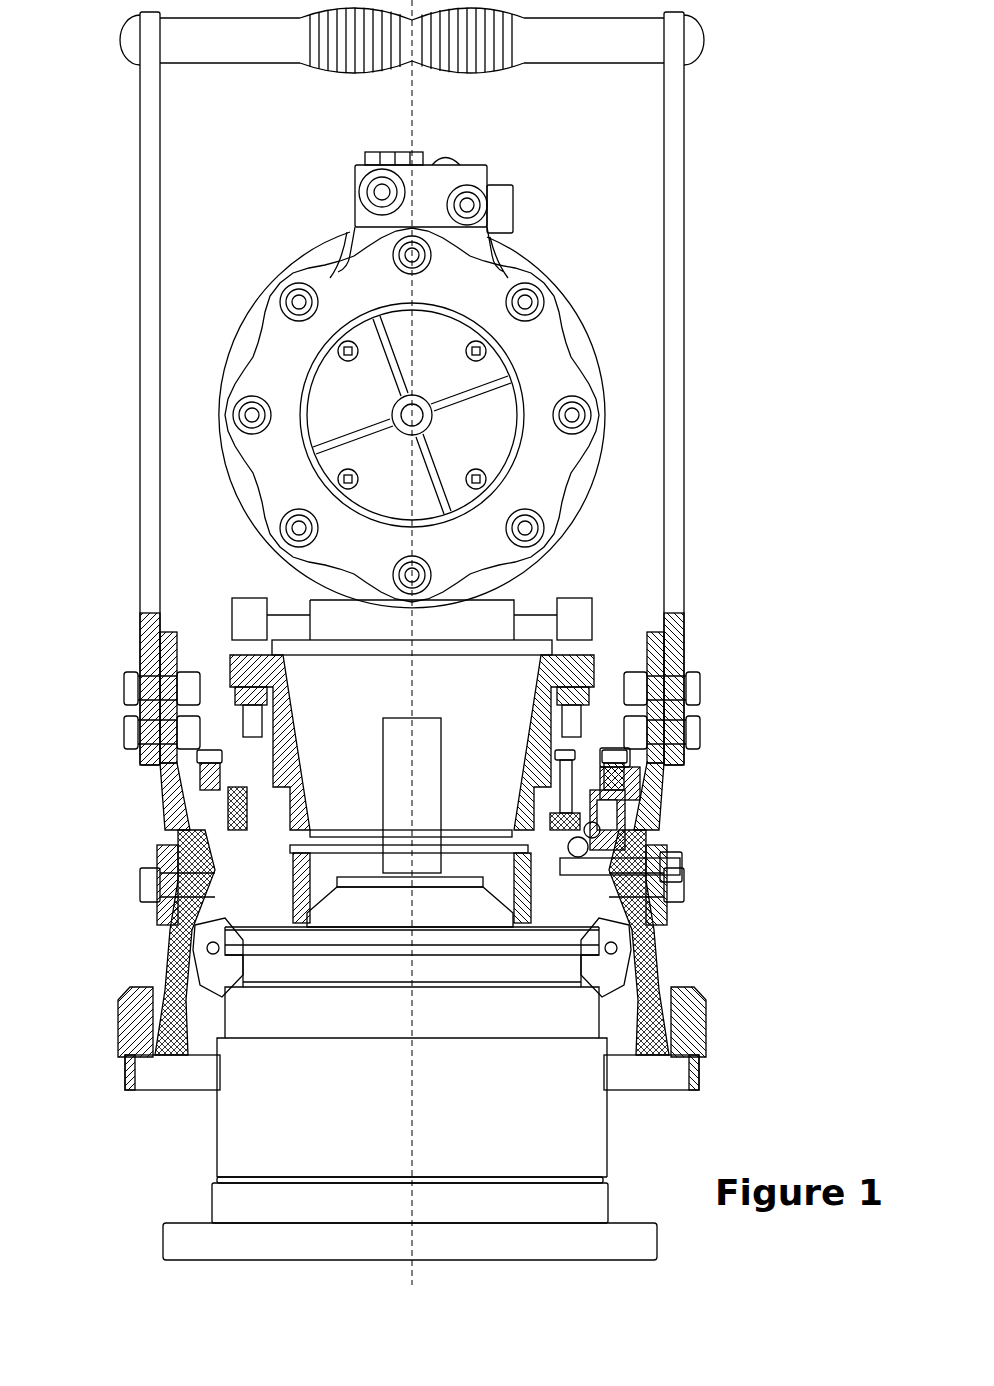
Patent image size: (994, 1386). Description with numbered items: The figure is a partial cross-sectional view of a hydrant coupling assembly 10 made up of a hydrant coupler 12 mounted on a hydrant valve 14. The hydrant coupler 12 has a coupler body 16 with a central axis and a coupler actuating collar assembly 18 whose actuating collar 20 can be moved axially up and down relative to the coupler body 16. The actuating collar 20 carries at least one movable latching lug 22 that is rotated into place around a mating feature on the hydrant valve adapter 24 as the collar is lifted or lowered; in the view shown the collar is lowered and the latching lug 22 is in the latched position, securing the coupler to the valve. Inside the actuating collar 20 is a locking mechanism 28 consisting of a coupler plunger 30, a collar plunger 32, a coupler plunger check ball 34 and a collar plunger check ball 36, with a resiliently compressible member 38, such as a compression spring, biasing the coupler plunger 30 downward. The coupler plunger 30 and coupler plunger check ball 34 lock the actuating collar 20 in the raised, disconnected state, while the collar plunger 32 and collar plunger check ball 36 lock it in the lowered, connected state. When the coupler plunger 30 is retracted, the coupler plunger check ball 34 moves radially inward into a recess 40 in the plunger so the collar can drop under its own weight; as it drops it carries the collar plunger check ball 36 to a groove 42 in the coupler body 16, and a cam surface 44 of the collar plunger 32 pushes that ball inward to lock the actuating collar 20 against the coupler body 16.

The hydrant coupling assembly 10 is at (92, 538).
The hydrant coupler 12 is at (683, 606).
The hydrant valve 14 is at (217, 1128).
The coupler body 16 is at (556, 726).
The coupler actuating collar assembly 18 is at (668, 952).
The actuating collar 20 is at (660, 977).
The latching lug 22 is at (612, 960).
The hydrant valve adapter 24 is at (235, 1205).
The locking mechanism 28 is at (619, 637).
The coupler plunger 30 is at (567, 893).
The collar plunger 32 is at (612, 792).
The coupler plunger check ball 34 is at (612, 840).
The collar plunger check ball 36 is at (600, 826).
The resiliently compressible member 38 is at (600, 772).
The recess 40 is at (540, 856).
The groove 42 is at (238, 826).
The cam surface 44 is at (175, 848).